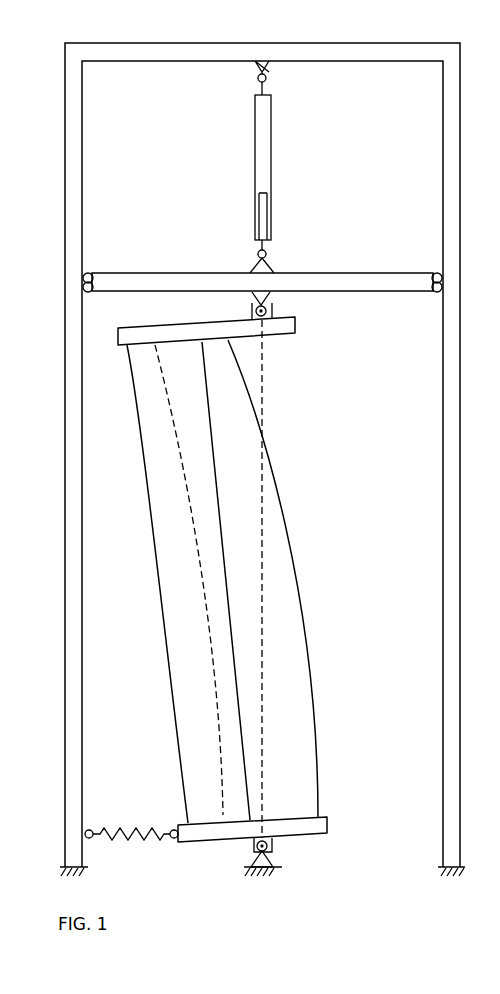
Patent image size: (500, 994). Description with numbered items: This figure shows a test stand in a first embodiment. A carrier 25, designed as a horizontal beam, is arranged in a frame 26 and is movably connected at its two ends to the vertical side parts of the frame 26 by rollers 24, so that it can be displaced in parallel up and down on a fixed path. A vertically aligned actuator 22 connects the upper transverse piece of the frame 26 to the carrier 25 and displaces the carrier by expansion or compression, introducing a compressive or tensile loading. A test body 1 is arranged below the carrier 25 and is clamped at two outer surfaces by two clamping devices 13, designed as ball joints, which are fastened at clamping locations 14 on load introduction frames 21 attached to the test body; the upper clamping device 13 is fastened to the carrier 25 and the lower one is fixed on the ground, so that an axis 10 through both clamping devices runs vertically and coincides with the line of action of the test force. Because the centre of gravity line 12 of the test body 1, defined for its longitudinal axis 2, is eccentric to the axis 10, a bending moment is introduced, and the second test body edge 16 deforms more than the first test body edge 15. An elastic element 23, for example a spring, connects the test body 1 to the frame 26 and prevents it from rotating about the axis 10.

The test body 1 is at (238, 584).
The longitudinal axis 2 is at (218, 508).
The axis 10 is at (261, 395).
The centre of gravity line 12 is at (206, 604).
The clamping device 13 is at (270, 303).
The clamping location 14 is at (260, 319).
The first test body edge 15 is at (147, 465).
The second test body edge 16 is at (300, 597).
The load introduction frame 21 is at (274, 330).
The actuator 22 is at (267, 148).
The elastic element 23 is at (128, 832).
The roller 24 is at (93, 272).
The carrier 25 is at (295, 273).
The frame 26 is at (65, 552).